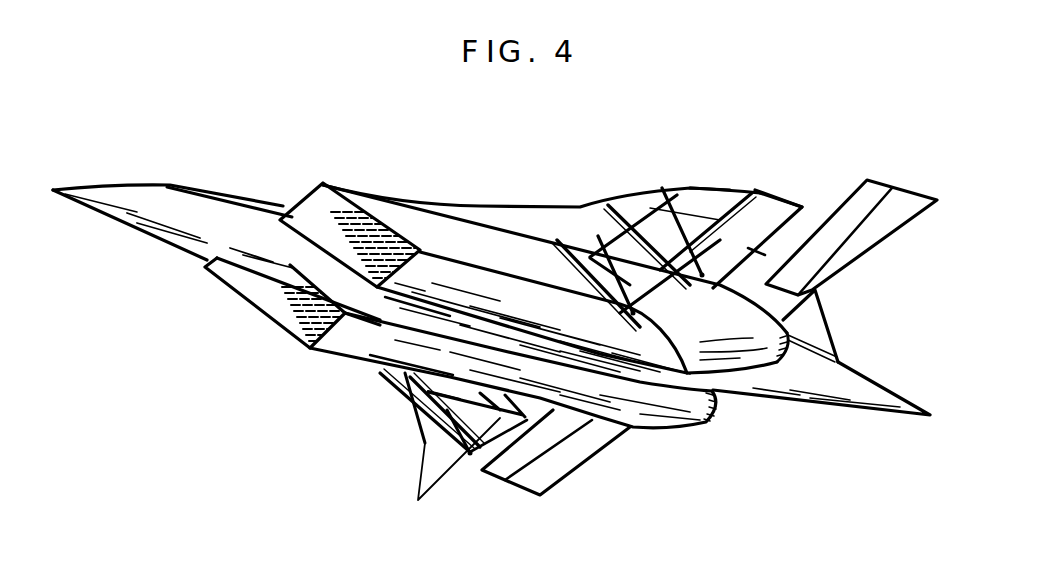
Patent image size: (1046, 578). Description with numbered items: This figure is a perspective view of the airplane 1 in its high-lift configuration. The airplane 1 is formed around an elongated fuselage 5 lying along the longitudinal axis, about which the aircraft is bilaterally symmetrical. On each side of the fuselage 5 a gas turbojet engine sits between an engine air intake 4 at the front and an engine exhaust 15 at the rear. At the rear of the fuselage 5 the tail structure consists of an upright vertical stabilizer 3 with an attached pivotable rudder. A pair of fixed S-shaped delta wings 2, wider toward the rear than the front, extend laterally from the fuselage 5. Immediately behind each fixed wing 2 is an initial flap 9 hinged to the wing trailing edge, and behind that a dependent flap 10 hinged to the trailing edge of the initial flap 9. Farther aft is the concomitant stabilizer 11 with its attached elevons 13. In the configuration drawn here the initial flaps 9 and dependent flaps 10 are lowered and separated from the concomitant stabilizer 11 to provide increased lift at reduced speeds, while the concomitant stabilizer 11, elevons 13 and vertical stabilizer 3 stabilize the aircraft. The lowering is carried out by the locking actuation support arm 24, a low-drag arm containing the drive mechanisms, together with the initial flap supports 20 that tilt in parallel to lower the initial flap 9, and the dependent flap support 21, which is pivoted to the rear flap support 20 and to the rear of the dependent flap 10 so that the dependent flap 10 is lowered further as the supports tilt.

The airplane 1 is at (323, 183).
The fixed delta wing 2 is at (482, 205).
The vertical stabilizer 3 is at (833, 327).
The engine air intake 4 is at (260, 313).
The fuselage 5 is at (153, 238).
The initial flap 9 is at (703, 188).
The dependent flap 10 is at (762, 193).
The concomitant stabilizer 11 is at (878, 178).
The elevon 13 is at (883, 240).
The engine exhaust 15 is at (707, 416).
The initial flap support 20 is at (680, 228).
The dependent flap support 21 is at (693, 255).
The locking actuation support arm 24 is at (606, 203).